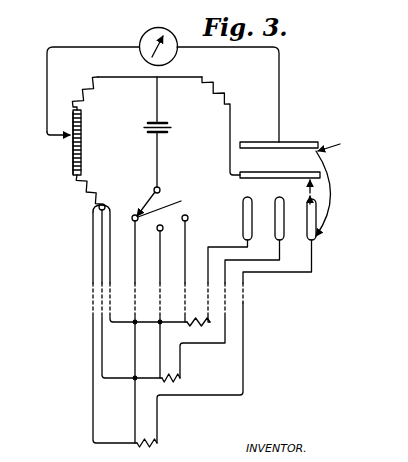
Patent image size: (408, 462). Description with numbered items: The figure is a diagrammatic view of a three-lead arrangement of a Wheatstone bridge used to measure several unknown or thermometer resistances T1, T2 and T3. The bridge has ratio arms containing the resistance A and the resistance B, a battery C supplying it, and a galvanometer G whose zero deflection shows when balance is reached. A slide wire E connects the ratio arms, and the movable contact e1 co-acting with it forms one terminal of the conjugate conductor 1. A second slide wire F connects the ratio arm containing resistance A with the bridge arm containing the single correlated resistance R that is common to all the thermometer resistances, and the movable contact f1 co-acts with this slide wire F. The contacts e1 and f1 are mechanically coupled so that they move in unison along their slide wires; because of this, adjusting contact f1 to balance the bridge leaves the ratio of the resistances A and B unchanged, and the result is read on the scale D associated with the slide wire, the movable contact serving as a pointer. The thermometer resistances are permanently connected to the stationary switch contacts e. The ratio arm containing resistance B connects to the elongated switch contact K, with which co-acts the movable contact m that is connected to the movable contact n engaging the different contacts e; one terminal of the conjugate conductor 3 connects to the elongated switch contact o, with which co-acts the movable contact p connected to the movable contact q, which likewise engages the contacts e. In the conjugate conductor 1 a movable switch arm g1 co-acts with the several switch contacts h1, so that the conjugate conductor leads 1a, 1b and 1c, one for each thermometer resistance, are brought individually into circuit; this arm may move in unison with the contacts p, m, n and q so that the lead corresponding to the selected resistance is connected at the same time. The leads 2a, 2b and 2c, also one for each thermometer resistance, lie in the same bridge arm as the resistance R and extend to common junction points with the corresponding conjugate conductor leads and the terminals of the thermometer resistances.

The galvanometer G is at (141, 38).
The resistance A is at (88, 84).
The resistance B is at (219, 86).
The battery C is at (168, 129).
The scale D is at (82, 138).
The slide wire E is at (172, 76).
The second slide wire F is at (72, 161).
The single correlated resistance R is at (93, 181).
The elongated switch contact K is at (258, 172).
The elongated switch contact o is at (298, 140).
The movable contact p is at (337, 144).
The movable contact q is at (318, 233).
The movable contact m is at (306, 183).
The movable contact n is at (306, 198).
The stationary switch contacts e is at (307, 220).
The movable contact e1 is at (156, 81).
The movable contact f1 is at (65, 133).
The movable switch arm g1 is at (139, 207).
The switch contacts h1 is at (167, 203).
The conjugate conductor 1 is at (158, 105).
The conjugate conductor 3 is at (47, 128).
The conjugate conductor lead 1a is at (127, 412).
The conjugate conductor lead 1b is at (160, 367).
The conjugate conductor lead 1c is at (186, 320).
The lead 2a is at (93, 265).
The lead 2b is at (102, 283).
The lead 2c is at (110, 243).
The unknown or thermometer resistance T1 is at (182, 376).
The unknown or thermometer resistance T2 is at (210, 322).
The unknown or thermometer resistance T3 is at (141, 447).